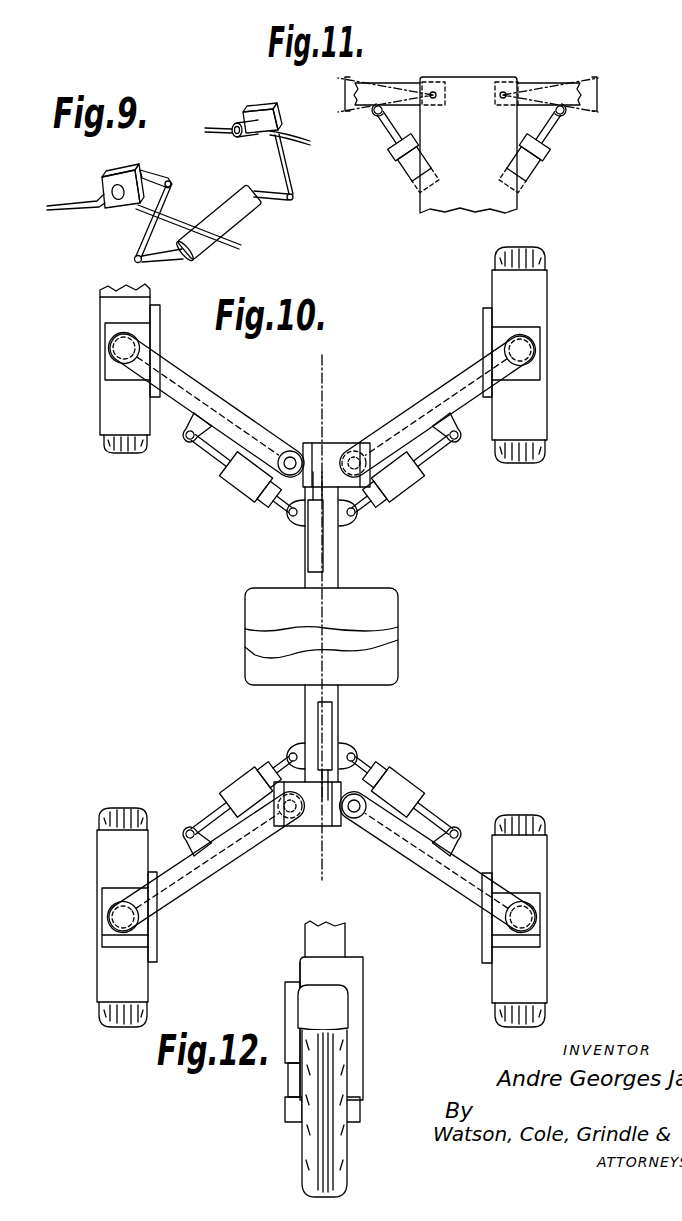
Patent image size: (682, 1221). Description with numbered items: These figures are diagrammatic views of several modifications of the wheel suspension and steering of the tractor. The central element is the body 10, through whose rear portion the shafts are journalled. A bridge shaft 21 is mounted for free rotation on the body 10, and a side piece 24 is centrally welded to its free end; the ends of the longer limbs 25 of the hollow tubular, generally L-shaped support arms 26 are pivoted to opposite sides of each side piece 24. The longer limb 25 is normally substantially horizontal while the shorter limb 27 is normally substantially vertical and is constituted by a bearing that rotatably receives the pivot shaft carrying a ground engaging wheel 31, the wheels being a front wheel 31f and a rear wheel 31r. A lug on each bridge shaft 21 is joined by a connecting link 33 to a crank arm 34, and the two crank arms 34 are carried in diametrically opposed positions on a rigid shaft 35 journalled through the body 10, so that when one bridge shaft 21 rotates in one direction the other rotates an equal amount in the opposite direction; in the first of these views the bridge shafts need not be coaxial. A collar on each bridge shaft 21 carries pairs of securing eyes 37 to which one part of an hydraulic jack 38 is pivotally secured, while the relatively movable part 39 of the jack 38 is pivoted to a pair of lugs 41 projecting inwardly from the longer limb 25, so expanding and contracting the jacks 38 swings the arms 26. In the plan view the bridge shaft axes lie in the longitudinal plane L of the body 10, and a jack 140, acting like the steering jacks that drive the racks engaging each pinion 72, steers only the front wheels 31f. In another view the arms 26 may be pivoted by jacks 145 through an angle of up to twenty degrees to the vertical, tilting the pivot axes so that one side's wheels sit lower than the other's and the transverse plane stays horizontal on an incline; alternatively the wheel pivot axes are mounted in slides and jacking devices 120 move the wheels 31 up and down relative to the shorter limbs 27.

In FIG. 11, the body 10 is at (470, 191).
In FIG. 10, the body 10 is at (246, 662).
In FIG. 9, the bridge shaft 21 is at (183, 147).
In FIG. 11, the bridge shaft 21 is at (400, 88).
In FIG. 10, the bridge shaft 21 is at (347, 577).
In FIG. 9, the side piece 24 is at (258, 106).
In FIG. 9, the longer limb 25 is at (122, 222).
In FIG. 10, the support arm 26 is at (240, 411).
In FIG. 12, the support arm 26 is at (302, 945).
In FIG. 12, the shorter limb 27 is at (337, 947).
In FIG. 12, the ground engaging wheel 31 is at (340, 1130).
In FIG. 10, the front wheel 31f is at (133, 460).
In FIG. 10, the rear wheel 31r is at (148, 1010).
In FIG. 9, the connecting link 33 is at (172, 198).
In FIG. 9, the crank arm 34 is at (180, 258).
In FIG. 9, the rigid shaft 35 is at (233, 210).
In FIG. 10, the securing eyes 37 is at (297, 519).
In FIG. 10, the hydraulic jack 38 is at (240, 484).
In FIG. 10, the movable part of the jack 39 is at (205, 458).
In FIG. 10, the lugs 41 is at (187, 428).
In FIG. 10, the pinion 72 is at (293, 445).
In FIG. 12, the jacking device 120 is at (285, 1013).
In FIG. 10, the jack 140 is at (315, 558).
In FIG. 11, the jack 145 is at (405, 166).
In FIG. 10, the longitudinal plane L is at (325, 388).